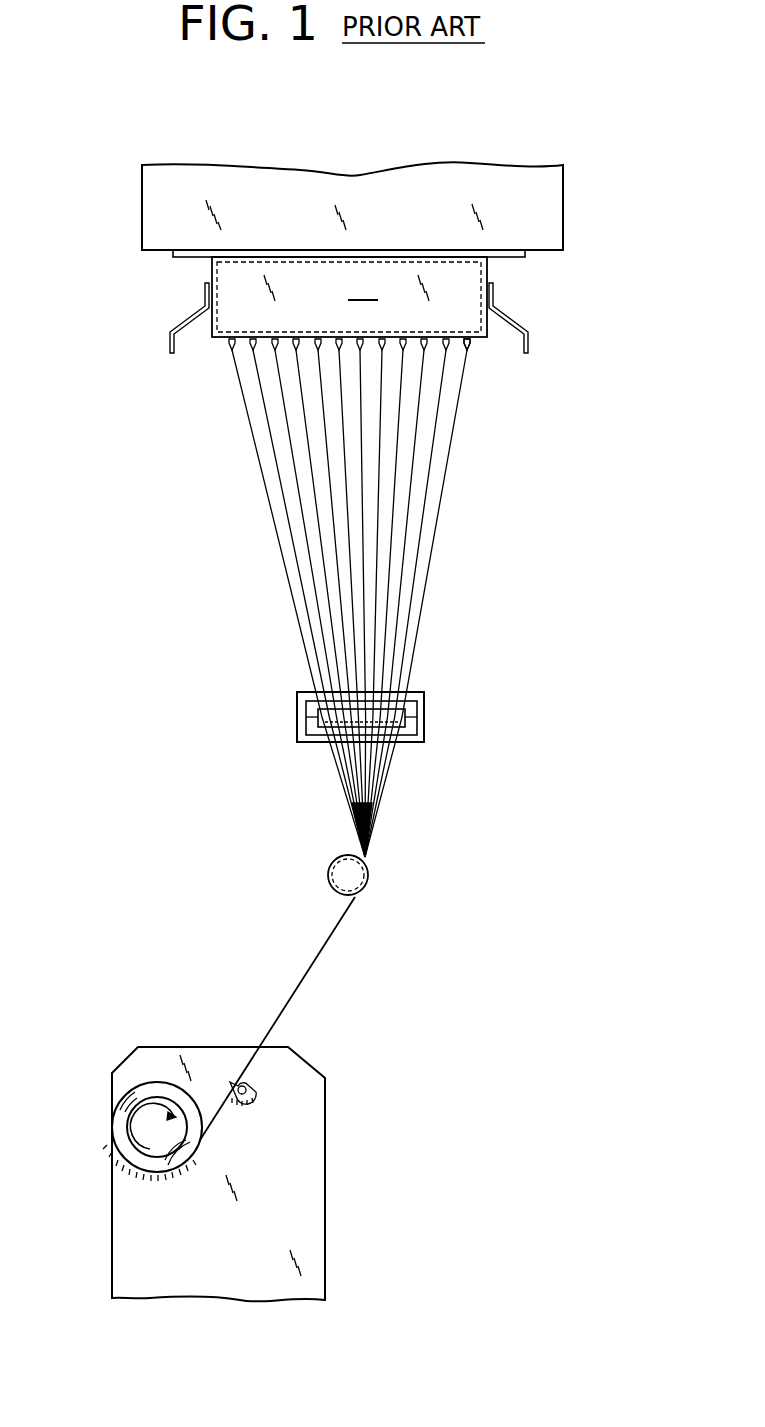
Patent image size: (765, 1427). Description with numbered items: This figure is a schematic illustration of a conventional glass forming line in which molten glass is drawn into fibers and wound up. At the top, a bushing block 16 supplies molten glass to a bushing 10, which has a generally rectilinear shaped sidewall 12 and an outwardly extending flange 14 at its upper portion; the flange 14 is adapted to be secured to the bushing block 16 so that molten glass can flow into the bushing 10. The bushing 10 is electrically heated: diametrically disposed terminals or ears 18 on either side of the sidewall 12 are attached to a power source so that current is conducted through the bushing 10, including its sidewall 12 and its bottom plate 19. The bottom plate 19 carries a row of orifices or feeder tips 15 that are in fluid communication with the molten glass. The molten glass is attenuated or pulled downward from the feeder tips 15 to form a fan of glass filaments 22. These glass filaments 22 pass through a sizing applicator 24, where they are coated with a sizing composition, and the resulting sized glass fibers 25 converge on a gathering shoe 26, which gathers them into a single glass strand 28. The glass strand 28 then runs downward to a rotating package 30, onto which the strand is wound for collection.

The bushing 10 is at (363, 288).
The sidewall 12 is at (295, 297).
The flange 14 is at (173, 251).
The feeder tips 15 is at (229, 342).
The bushing block 16 is at (551, 206).
The terminals 18 is at (168, 340).
The bottom plate 19 is at (480, 344).
The glass filaments 22 is at (416, 476).
The sizing applicator 24 is at (425, 715).
The sized glass fibers 25 is at (352, 803).
The gathering shoe 26 is at (372, 877).
The glass strand 28 is at (327, 942).
The package 30 is at (127, 1135).